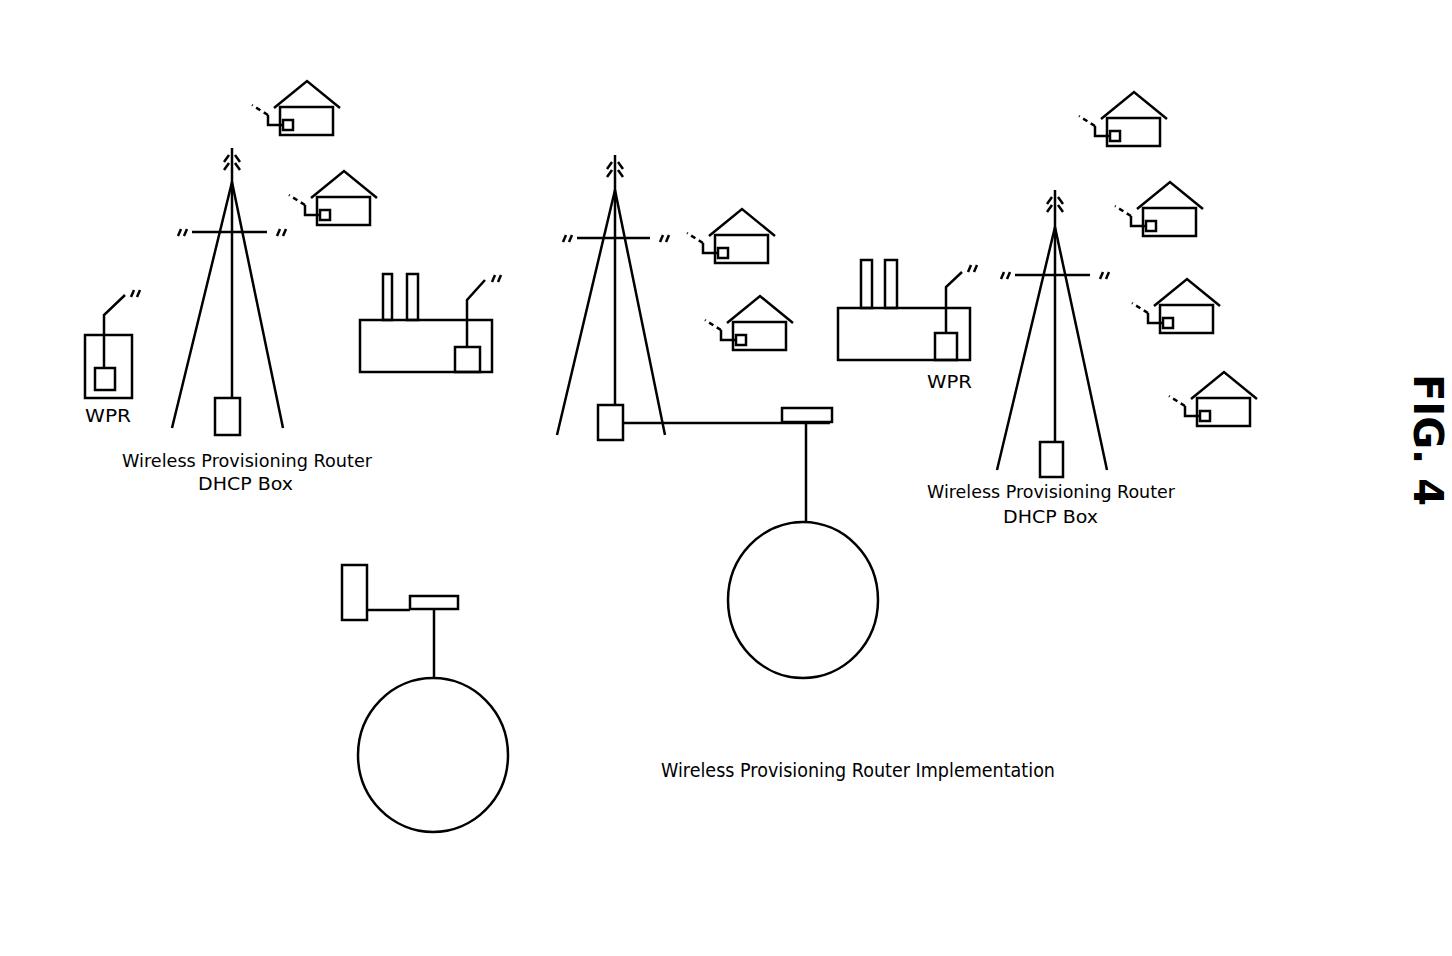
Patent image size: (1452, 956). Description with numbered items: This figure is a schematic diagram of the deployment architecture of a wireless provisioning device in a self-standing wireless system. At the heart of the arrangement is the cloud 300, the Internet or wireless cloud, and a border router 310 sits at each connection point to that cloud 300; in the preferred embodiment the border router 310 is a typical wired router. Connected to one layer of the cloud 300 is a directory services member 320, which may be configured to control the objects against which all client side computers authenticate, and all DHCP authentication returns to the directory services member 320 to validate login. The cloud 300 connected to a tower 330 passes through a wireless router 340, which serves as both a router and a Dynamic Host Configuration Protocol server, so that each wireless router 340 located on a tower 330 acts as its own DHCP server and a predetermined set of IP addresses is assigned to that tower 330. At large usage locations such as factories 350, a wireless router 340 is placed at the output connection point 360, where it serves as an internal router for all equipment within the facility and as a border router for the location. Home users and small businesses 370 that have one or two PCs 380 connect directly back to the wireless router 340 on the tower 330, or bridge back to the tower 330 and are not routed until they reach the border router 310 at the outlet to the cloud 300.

The cloud 300 is at (843, 658).
The border router 310 is at (817, 427).
The directory services member 320 is at (360, 578).
The tower 330 is at (632, 162).
The wireless router 340 is at (598, 420).
The factory 350 is at (453, 318).
The output connection point 360 is at (485, 280).
The home users and small businesses 370 is at (1177, 88).
The PC 380 is at (1225, 427).